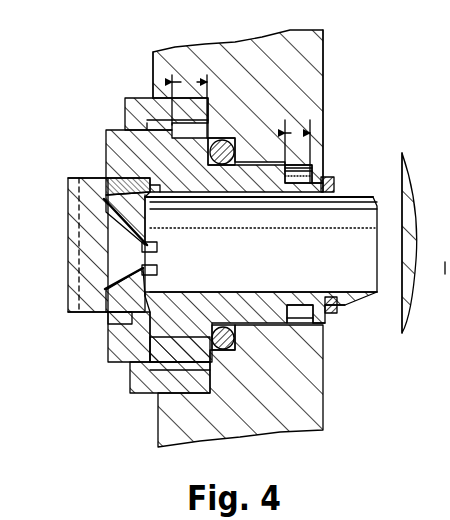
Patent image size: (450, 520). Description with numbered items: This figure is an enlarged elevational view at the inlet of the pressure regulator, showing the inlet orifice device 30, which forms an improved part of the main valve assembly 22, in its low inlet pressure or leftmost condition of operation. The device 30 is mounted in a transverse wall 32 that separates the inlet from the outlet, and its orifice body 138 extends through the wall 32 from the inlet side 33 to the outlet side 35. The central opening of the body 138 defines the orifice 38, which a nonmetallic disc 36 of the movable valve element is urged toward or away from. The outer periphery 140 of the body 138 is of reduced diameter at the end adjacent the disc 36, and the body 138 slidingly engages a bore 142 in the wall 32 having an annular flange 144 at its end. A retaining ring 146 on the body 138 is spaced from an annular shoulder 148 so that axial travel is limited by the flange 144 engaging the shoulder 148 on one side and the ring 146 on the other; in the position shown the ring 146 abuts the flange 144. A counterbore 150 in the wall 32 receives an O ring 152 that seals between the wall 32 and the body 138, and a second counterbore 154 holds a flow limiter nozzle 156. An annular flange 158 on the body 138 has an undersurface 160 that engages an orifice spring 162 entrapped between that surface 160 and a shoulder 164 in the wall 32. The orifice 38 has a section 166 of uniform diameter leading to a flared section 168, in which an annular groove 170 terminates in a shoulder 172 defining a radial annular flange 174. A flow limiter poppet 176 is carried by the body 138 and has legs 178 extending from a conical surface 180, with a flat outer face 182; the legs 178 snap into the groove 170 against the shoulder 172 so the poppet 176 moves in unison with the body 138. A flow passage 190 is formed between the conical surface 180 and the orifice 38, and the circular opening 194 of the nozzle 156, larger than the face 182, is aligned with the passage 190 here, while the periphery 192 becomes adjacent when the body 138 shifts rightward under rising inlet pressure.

The main valve assembly 22 is at (414, 173).
The inlet orifice device 30 is at (63, 170).
The transverse wall 32 is at (253, 49).
The inlet side 33 is at (153, 66).
The outlet side 35 is at (324, 62).
The nonmetallic disc 36 is at (410, 298).
The orifice 38 is at (371, 199).
The orifice body 138 is at (338, 192).
The outer periphery 140 is at (328, 177).
The bore 142 is at (326, 335).
The annular flange 144 is at (319, 315).
The retaining ring 146 is at (338, 309).
The annular shoulder 148 is at (297, 322).
The counterbore 150 is at (243, 161).
The O ring 152 is at (220, 140).
The second counterbore 154 is at (148, 99).
The flow limiter nozzle 156 is at (113, 345).
The annular flange 158 is at (138, 367).
The undersurface 160 is at (200, 360).
The orifice spring 162 is at (299, 300).
The shoulder 164 is at (237, 349).
The section of substantially uniform diameter 166 is at (275, 291).
The flared section 168 is at (178, 292).
The annular groove 170 is at (150, 292).
The shoulder 172 is at (156, 188).
The radial annular flange 174 is at (128, 322).
The flow limiter poppet 176 is at (68, 257).
The legs 178 is at (107, 189).
The conical surface 180 is at (100, 186).
The outer face 182 is at (67, 214).
The flow passage 190 is at (141, 218).
The periphery 192 is at (72, 298).
The circular opening 194 is at (120, 310).